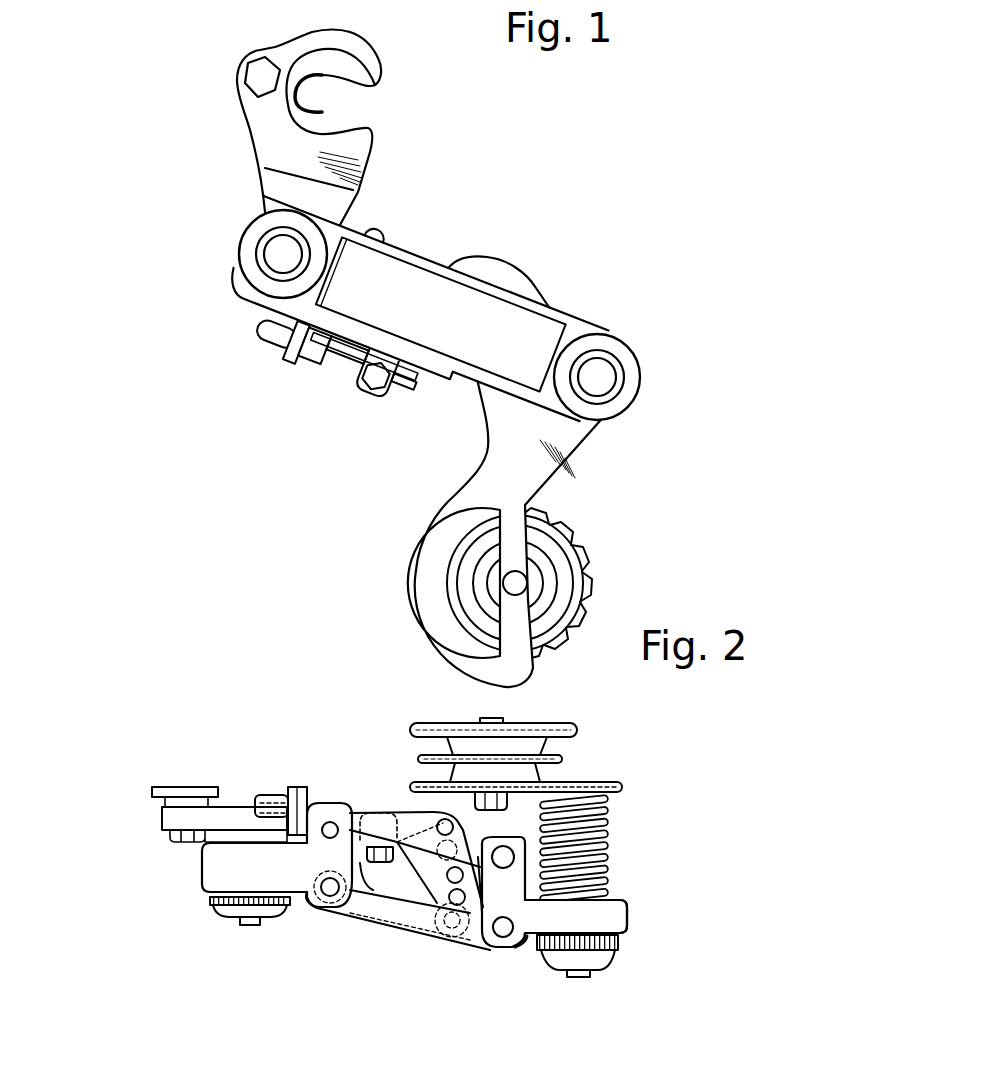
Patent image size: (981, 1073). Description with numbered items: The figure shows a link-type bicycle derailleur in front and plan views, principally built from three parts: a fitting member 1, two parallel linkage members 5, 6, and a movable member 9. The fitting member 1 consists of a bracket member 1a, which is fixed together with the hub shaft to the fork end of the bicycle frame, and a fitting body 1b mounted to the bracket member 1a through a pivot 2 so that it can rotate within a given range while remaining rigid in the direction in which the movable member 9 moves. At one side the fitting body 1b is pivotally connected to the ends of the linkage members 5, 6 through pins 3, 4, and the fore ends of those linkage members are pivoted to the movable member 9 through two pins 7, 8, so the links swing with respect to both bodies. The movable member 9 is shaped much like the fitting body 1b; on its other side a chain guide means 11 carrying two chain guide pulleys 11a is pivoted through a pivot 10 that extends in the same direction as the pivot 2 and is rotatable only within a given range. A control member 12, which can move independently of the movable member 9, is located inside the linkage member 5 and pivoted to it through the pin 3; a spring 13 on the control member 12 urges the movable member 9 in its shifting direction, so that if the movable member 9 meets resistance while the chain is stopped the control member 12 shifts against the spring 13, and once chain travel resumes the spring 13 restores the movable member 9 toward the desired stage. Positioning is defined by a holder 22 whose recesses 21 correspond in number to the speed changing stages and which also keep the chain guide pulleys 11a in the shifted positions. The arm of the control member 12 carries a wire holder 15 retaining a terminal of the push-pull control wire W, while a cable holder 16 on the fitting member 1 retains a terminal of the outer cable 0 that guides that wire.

In FIG. 1, the fitting member 1 is at (248, 197).
In FIG. 2, the fitting member 1 is at (207, 873).
In FIG. 1, the bracket member 1a is at (265, 128).
In FIG. 2, the bracket member 1a is at (238, 813).
In FIG. 1, the fitting body 1b is at (258, 297).
In FIG. 2, the fitting body 1b is at (257, 880).
In FIG. 1, the pivot 2 is at (272, 250).
In FIG. 2, the pivot 2 is at (283, 823).
In FIG. 1, the pin 3 is at (385, 232).
In FIG. 2, the pin 3 is at (330, 896).
In FIG. 2, the pin 4 is at (330, 822).
In FIG. 1, the linkage member 5 is at (358, 292).
In FIG. 2, the linkage member 5 is at (410, 922).
In FIG. 2, the linkage member 6 is at (393, 850).
In FIG. 1, the pin 7 is at (550, 300).
In FIG. 2, the pin 7 is at (503, 928).
In FIG. 2, the pin 8 is at (505, 857).
In FIG. 1, the movable member 9 is at (598, 334).
In FIG. 2, the movable member 9 is at (617, 913).
In FIG. 1, the pivot 10 is at (607, 378).
In FIG. 2, the pivot 10 is at (553, 797).
In FIG. 1, the chain guide means 11 is at (577, 442).
In FIG. 2, the chain guide means 11 is at (615, 787).
In FIG. 1, the chain guide pulleys 11a is at (590, 566).
In FIG. 2, the chain guide pulleys 11a is at (563, 760).
In FIG. 2, the control member 12 is at (420, 893).
In FIG. 2, the spring 13 is at (460, 930).
In FIG. 1, the wire holder 15 is at (380, 386).
In FIG. 2, the wire holder 15 is at (384, 807).
In FIG. 1, the cable holder 16 is at (292, 323).
In FIG. 2, the cable holder 16 is at (297, 787).
In FIG. 2, the recesses 21 is at (445, 818).
In FIG. 2, the holder 22 is at (423, 815).
In FIG. 1, the control wire W is at (350, 360).
In FIG. 1, the outer cable 0 is at (266, 328).